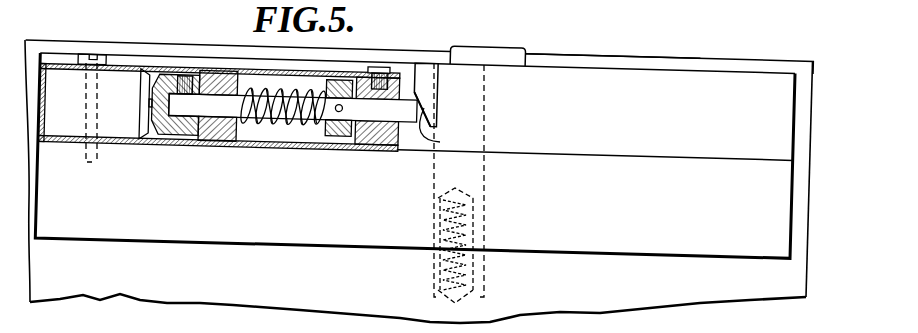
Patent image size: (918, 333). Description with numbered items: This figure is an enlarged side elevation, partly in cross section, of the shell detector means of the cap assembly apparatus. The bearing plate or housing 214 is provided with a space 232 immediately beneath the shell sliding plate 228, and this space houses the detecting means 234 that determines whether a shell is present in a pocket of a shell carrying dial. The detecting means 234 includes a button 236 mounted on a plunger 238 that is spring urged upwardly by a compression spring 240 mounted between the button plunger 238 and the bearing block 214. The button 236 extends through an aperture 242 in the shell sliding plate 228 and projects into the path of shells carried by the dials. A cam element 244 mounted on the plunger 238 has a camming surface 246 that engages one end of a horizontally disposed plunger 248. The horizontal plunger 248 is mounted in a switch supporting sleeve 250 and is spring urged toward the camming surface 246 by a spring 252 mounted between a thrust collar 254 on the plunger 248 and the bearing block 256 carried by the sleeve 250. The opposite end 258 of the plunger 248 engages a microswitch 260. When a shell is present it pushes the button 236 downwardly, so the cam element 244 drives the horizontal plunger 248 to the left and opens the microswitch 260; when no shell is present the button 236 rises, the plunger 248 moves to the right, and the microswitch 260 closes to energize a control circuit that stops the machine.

The bearing plate or housing 214 is at (137, 298).
The shell sliding plate 228 is at (376, 66).
The space 232 is at (42, 53).
The detecting means 234 is at (540, 53).
The button 236 is at (483, 48).
The plunger 238 is at (486, 143).
The compression spring 240 is at (506, 223).
The aperture 242 is at (452, 60).
The cam element 244 is at (444, 103).
The camming surface 246 is at (442, 138).
The horizontally disposed plunger 248 is at (302, 127).
The switch supporting sleeve 250 is at (180, 143).
The spring 252 is at (264, 128).
The thrust collar 254 is at (340, 144).
The bearing block 256 is at (218, 144).
The opposite end of plunger 258 is at (168, 143).
The microswitch 260 is at (113, 143).